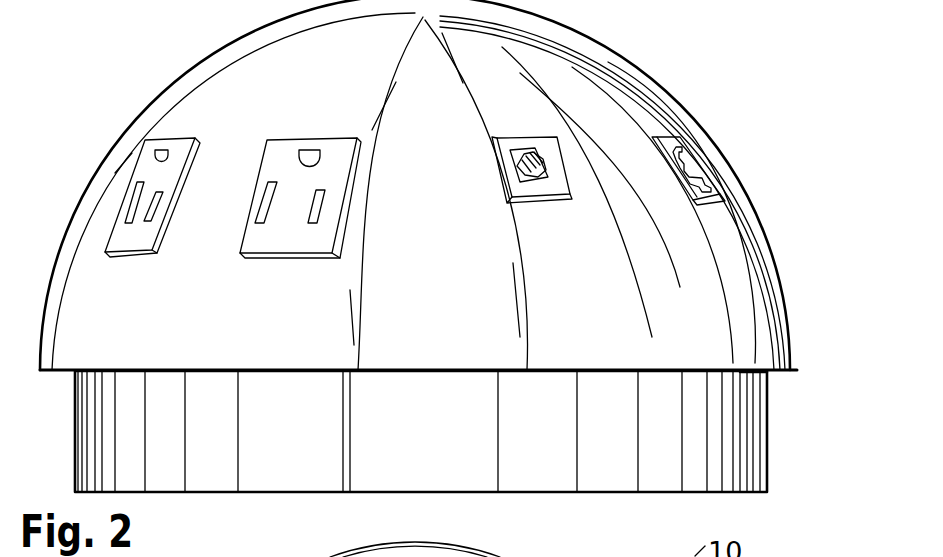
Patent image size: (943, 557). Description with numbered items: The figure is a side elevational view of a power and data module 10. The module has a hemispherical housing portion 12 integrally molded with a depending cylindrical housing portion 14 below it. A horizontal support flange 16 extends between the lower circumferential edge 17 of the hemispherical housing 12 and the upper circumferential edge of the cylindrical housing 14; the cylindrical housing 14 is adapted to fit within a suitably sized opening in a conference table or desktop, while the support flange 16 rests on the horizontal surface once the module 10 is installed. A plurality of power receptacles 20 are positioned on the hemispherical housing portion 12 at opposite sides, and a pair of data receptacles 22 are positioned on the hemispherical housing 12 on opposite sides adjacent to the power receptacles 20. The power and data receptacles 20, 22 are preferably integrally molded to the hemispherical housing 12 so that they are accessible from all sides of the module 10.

The power and data module 10 is at (722, 98).
The hemispherical housing portion 12 is at (431, 249).
The cylindrical housing portion 14 is at (259, 483).
The horizontal support flange 16 is at (775, 373).
The lower circumferential edge 17 is at (797, 370).
The power receptacles 20 is at (250, 256).
The data receptacles 22 is at (690, 200).